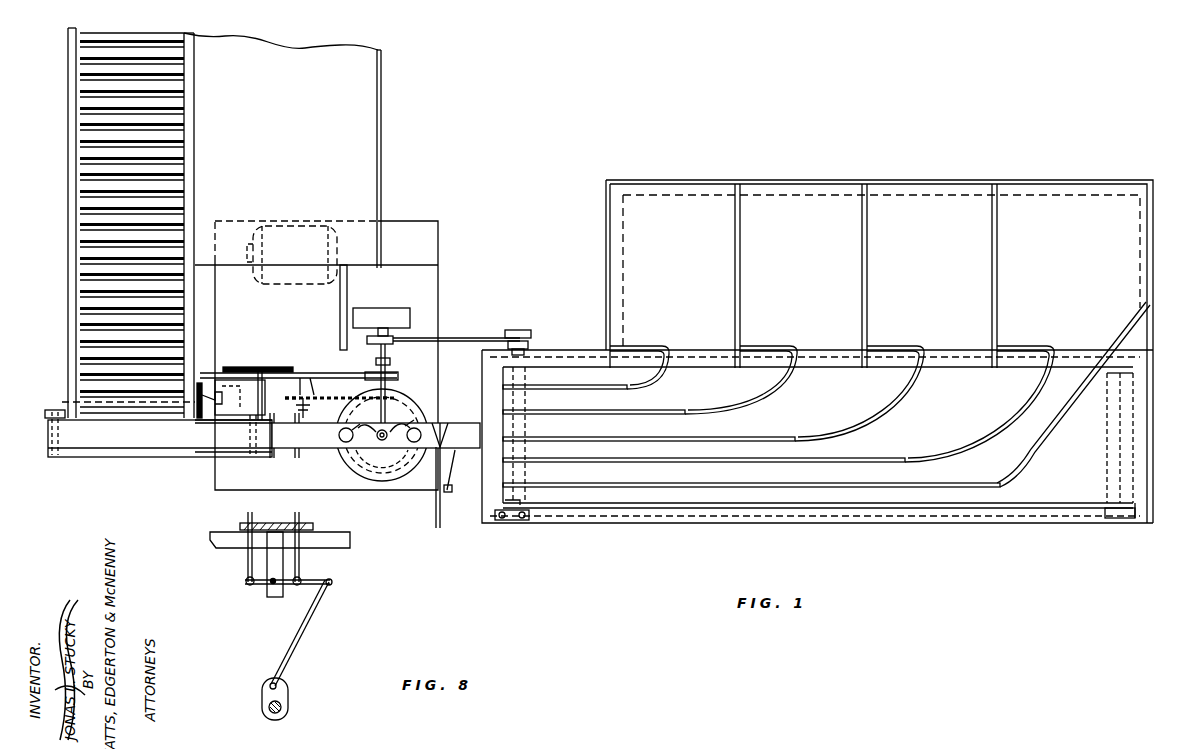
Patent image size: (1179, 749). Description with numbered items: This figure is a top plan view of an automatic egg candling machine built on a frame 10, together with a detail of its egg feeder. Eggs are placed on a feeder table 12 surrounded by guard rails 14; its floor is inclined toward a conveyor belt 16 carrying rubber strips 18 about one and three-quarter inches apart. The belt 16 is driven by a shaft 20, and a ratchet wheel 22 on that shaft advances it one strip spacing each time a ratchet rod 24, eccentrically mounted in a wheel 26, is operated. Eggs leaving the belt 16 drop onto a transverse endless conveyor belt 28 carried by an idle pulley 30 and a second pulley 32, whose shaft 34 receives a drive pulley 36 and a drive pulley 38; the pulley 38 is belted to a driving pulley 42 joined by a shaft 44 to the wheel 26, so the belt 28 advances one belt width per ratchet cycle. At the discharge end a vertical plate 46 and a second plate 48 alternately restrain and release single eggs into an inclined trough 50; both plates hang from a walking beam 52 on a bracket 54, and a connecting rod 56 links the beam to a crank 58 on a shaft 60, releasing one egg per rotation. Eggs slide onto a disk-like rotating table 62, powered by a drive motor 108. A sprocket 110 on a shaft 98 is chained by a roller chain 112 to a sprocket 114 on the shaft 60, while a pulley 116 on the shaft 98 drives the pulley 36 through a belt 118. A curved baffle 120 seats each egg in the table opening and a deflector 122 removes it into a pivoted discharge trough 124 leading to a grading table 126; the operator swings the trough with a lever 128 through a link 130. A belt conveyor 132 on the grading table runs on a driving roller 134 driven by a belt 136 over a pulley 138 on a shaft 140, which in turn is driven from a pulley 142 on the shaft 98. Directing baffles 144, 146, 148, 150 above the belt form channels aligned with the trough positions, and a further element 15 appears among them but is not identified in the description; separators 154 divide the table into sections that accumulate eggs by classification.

In FIG. 1, the frame 10 is at (418, 222).
In FIG. 1, the feeder table 12 is at (360, 135).
In FIG. 1, the guard rails 14 is at (382, 88).
In FIG. 1, the lower rod 15 is at (622, 487).
In FIG. 1, the conveyor belt 16 is at (178, 50).
In FIG. 1, the rubber strips 18 is at (180, 88).
In FIG. 1, the shaft 20 is at (70, 402).
In FIG. 1, the ratchet wheel 22 is at (200, 383).
In FIG. 1, the ratchet rod 24 is at (210, 383).
In FIG. 1, the wheel 26 is at (232, 421).
In FIG. 1, the endless conveyor belt 28 is at (170, 440).
In FIG. 1, the idle pulley 30 is at (52, 452).
In FIG. 1, the second pulley 32 is at (246, 456).
In FIG. 1, the shaft 34 is at (284, 391).
In FIG. 1, the drive pulley 36 is at (1100, 522).
In FIG. 1, the drive pulley 38 is at (265, 367).
In FIG. 1, the driving pulley 42 is at (258, 368).
In FIG. 1, the shaft 44 is at (240, 397).
In FIG. 1, the vertical plate 46 is at (273, 458).
In FIG. 8, the vertical plate 46 is at (248, 556).
In FIG. 1, the second plate 48 is at (298, 458).
In FIG. 8, the second plate 48 is at (299, 556).
In FIG. 1, the inclined trough 50 is at (330, 449).
In FIG. 8, the walking beam 52 is at (325, 580).
In FIG. 8, the bracket 54 is at (270, 575).
In FIG. 8, the connecting rod 56 is at (312, 616).
In FIG. 8, the crank 58 is at (282, 685).
In FIG. 1, the shaft 60 is at (310, 410).
In FIG. 8, the shaft 60 is at (282, 710).
In FIG. 1, the rotating table 62 is at (395, 428).
In FIG. 1, the shaft 98 is at (388, 362).
In FIG. 1, the drive motor 108 is at (295, 280).
In FIG. 1, the sprocket 110 is at (400, 378).
In FIG. 1, the roller chain 112 is at (328, 398).
In FIG. 1, the sprocket 114 is at (304, 378).
In FIG. 1, the pulley 116 is at (382, 372).
In FIG. 1, the belt 118 is at (316, 378).
In FIG. 1, the baffle 120 is at (366, 418).
In FIG. 1, the deflector 122 is at (407, 418).
In FIG. 1, the discharge trough 124 is at (452, 422).
In FIG. 1, the grading table 126 is at (510, 522).
In FIG. 1, the lever 128 is at (441, 500).
In FIG. 1, the link 130 is at (452, 470).
In FIG. 1, the belt conveyor 132 is at (580, 490).
In FIG. 1, the driving roller 134 is at (528, 508).
In FIG. 1, the belt 136 is at (450, 340).
In FIG. 1, the pulley 138 is at (528, 342).
In FIG. 1, the shaft 140 is at (518, 332).
In FIG. 1, the pulley 142 is at (395, 346).
In FIG. 1, the directing baffle 144 is at (590, 390).
In FIG. 1, the directing baffle 146 is at (598, 415).
In FIG. 1, the directing baffle 148 is at (606, 440).
In FIG. 1, the directing baffle 150 is at (614, 463).
In FIG. 1, the separators 154 is at (740, 270).